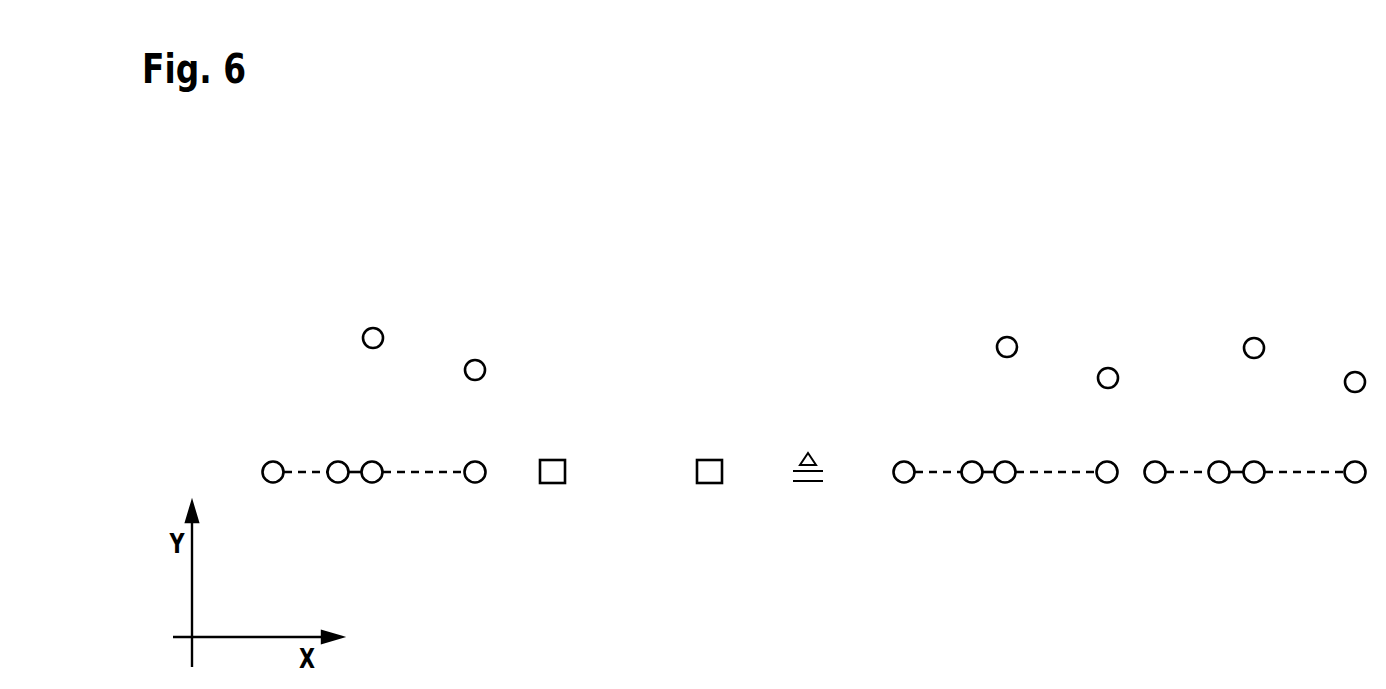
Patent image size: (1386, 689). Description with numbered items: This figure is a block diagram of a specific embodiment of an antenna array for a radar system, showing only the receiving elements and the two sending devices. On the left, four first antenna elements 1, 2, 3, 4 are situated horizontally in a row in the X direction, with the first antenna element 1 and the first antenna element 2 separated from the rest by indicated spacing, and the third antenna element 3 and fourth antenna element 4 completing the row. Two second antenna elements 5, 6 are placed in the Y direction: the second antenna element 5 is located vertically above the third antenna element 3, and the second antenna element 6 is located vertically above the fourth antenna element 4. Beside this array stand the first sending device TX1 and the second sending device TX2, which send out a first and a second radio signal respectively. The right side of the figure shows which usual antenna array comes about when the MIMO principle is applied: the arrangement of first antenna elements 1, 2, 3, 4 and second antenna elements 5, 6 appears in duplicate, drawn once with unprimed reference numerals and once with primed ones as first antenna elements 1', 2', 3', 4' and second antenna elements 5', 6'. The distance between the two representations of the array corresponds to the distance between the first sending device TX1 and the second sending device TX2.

The first antenna element 1 is at (589, 513).
The first antenna element 2 is at (655, 513).
The third antenna element 3 is at (689, 513).
The fourth antenna element 4 is at (791, 513).
The second antenna element 5 is at (690, 290).
The second antenna element 6 is at (791, 323).
The first antenna element 1' is at (1156, 513).
The first antenna element 2' is at (1220, 513).
The third antenna element 3' is at (1255, 513).
The fourth antenna element 4' is at (1356, 513).
The second antenna element 5' is at (1256, 295).
The second antenna element 6' is at (1357, 329).
The first sending device TX1 is at (553, 483).
The second sending device TX2 is at (710, 483).